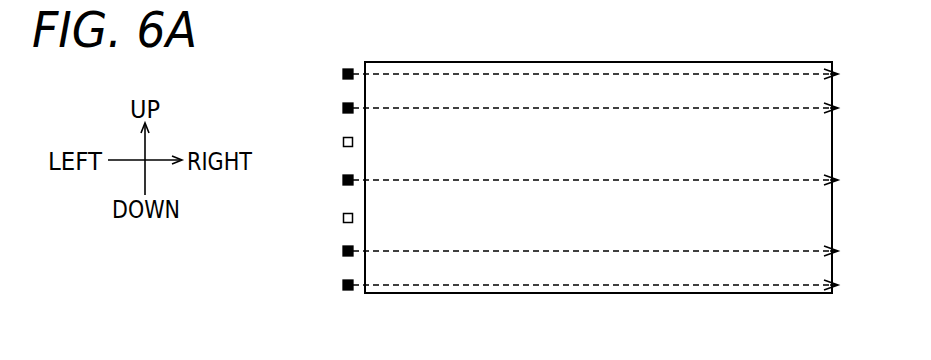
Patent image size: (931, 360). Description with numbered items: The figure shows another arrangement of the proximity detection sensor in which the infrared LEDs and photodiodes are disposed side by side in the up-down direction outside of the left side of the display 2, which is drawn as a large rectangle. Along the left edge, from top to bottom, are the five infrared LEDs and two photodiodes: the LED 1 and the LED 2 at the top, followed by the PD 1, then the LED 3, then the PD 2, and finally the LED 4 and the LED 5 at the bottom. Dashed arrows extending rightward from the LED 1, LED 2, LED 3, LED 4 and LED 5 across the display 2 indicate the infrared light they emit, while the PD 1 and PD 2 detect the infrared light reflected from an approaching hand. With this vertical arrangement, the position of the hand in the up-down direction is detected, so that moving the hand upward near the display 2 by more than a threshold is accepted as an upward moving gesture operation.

The display 2 is at (663, 60).
The LED 1 LED1 is at (557, 74).
The LED 2 LED2 is at (557, 108).
The PD 1 PD1 is at (321, 142).
The LED 3 LED3 is at (557, 180).
The PD 2 PD2 is at (321, 218).
The LED 4 LED4 is at (557, 251).
The LED 5 LED5 is at (557, 285).